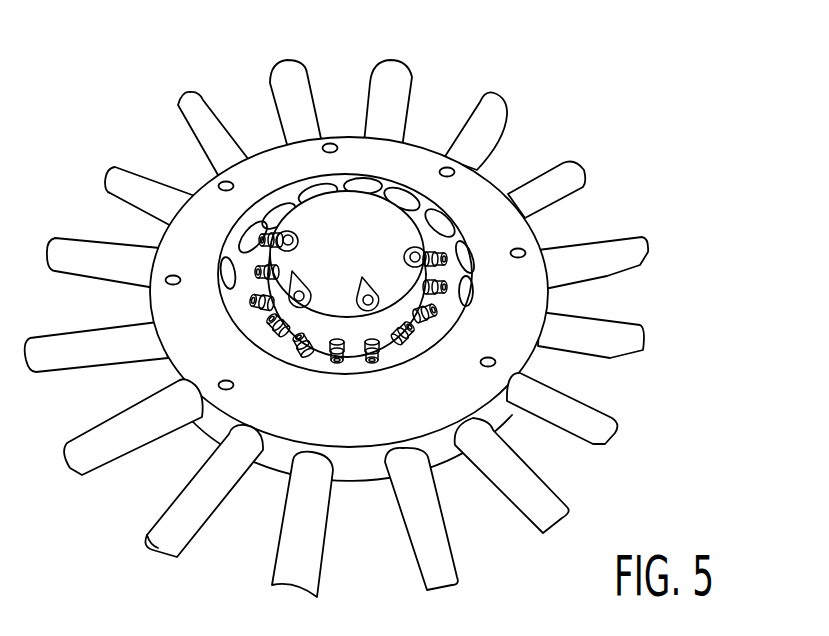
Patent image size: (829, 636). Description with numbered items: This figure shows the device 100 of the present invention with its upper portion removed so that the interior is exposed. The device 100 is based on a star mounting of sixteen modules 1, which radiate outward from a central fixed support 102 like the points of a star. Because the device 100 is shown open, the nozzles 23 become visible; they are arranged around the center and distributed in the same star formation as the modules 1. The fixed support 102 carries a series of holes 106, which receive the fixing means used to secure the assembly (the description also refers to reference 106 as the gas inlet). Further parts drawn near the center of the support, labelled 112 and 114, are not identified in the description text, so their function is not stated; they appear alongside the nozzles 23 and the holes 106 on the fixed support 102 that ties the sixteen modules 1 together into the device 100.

The device 100 is at (344, 304).
The module 1 is at (612, 253).
The fixed support 102 is at (273, 460).
The holes for the fixing means 106 is at (329, 146).
The openings 114 is at (518, 250).
The fastener heads 112 is at (312, 276).
The nozzle 23 is at (371, 343).